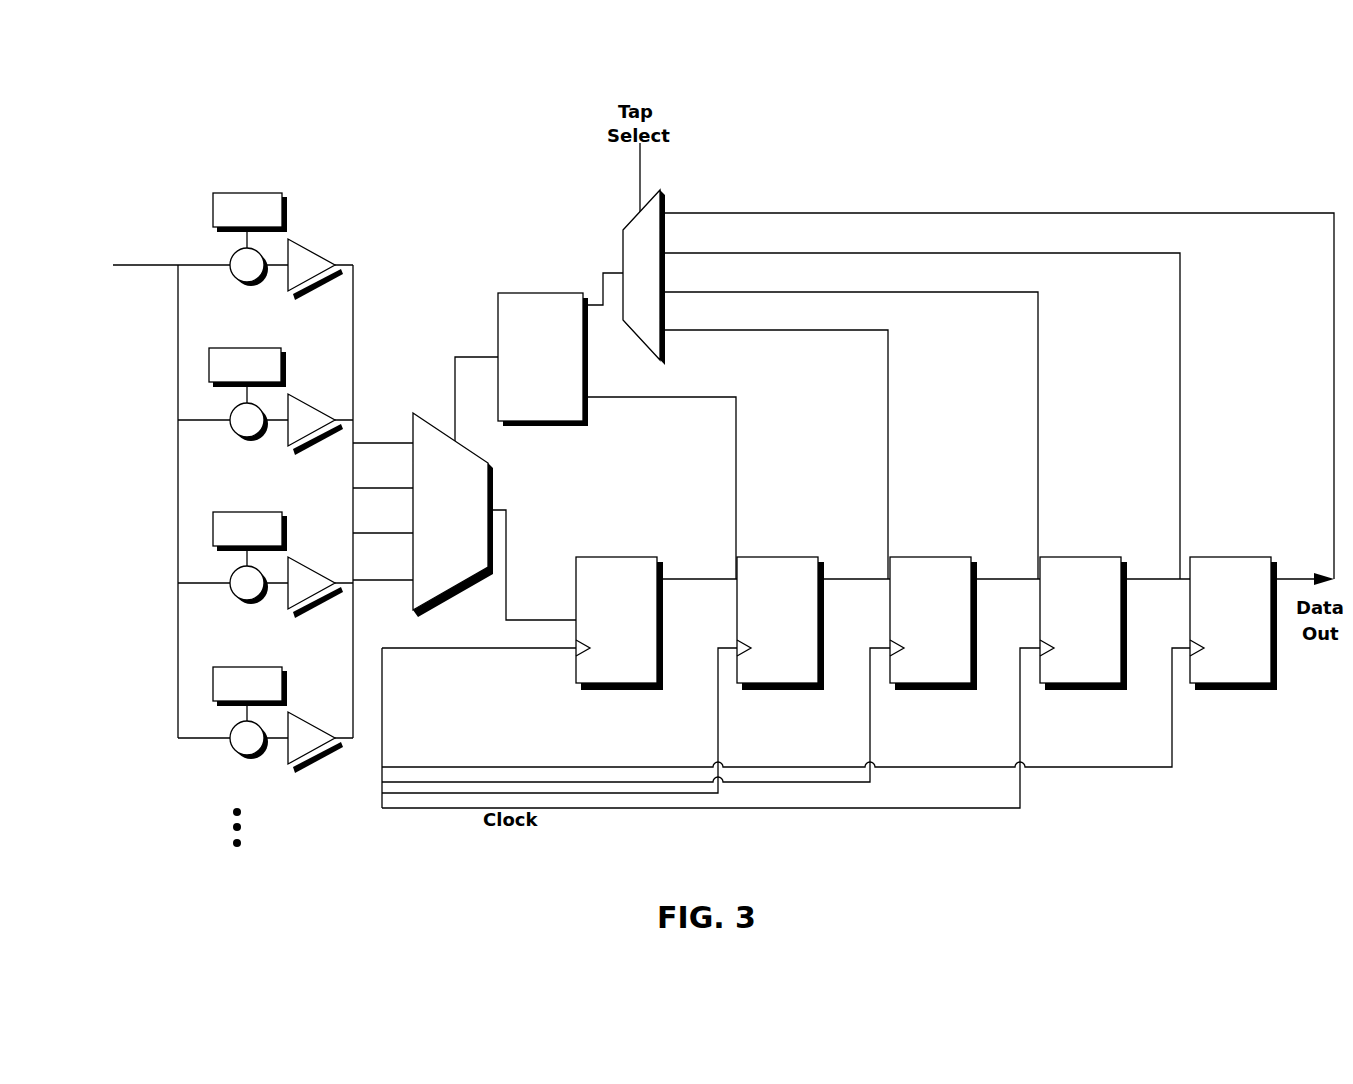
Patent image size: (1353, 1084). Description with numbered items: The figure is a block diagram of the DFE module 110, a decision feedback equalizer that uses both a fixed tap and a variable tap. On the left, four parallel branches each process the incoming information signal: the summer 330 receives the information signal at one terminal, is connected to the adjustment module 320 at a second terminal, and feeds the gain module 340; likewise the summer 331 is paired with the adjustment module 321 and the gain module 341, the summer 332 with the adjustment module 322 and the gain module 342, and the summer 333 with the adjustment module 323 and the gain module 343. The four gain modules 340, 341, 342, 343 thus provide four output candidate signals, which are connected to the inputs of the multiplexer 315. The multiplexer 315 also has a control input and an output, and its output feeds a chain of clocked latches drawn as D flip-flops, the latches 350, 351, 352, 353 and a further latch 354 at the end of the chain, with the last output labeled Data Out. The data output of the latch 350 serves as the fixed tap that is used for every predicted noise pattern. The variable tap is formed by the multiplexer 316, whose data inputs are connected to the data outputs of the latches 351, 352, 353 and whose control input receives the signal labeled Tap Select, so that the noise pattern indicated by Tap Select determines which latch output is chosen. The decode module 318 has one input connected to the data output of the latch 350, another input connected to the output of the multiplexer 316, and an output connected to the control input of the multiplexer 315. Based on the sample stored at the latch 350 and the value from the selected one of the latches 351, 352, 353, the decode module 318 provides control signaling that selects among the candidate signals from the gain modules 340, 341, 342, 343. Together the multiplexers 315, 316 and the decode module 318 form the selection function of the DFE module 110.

The DFE module 110 is at (260, 921).
The multiplexer 315 is at (492, 470).
The multiplexer 316 is at (638, 192).
The decode module 318 is at (540, 293).
The adjustment module 320 is at (243, 191).
The adjustment module 321 is at (243, 347).
The adjustment module 322 is at (243, 511).
The adjustment module 323 is at (243, 667).
The summer 330 is at (226, 253).
The summer 331 is at (226, 408).
The summer 332 is at (226, 571).
The summer 333 is at (226, 728).
The gain module 340 is at (303, 239).
The gain module 341 is at (303, 394).
The gain module 342 is at (300, 557).
The gain module 343 is at (298, 712).
The latch 350 is at (617, 690).
The latch 351 is at (777, 690).
The latch 352 is at (933, 690).
The latch 353 is at (1085, 690).
The flip-flop 354 is at (1230, 690).